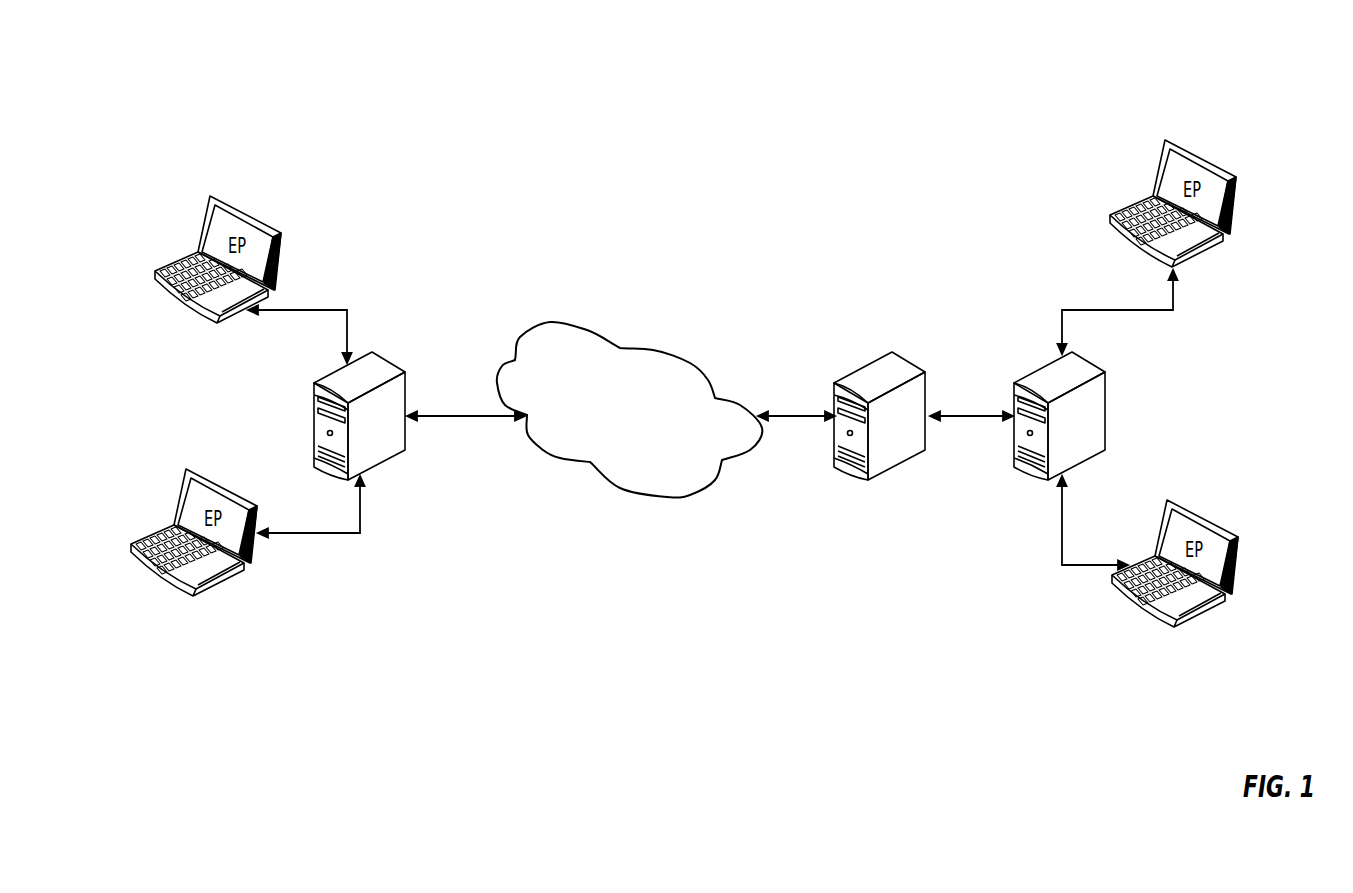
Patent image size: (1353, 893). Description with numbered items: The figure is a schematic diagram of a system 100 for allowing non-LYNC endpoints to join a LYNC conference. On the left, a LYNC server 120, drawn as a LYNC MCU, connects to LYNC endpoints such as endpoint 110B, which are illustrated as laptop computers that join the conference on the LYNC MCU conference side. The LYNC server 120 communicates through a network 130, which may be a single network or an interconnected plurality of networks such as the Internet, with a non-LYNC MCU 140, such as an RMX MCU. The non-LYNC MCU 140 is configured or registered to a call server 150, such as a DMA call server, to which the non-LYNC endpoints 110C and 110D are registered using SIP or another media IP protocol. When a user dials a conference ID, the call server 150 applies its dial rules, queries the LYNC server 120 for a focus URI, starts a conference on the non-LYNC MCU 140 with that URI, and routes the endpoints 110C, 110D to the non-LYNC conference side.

The system 100 is at (779, 73).
The endpoint 110B is at (215, 585).
The non-LYNC endpoint 110C is at (1203, 153).
The non-LYNC endpoint 110D is at (1203, 513).
The LYNC server 120 is at (387, 360).
The network 130 is at (690, 360).
The non-LYNC MCU 140 is at (904, 358).
The call server 150 is at (1107, 415).